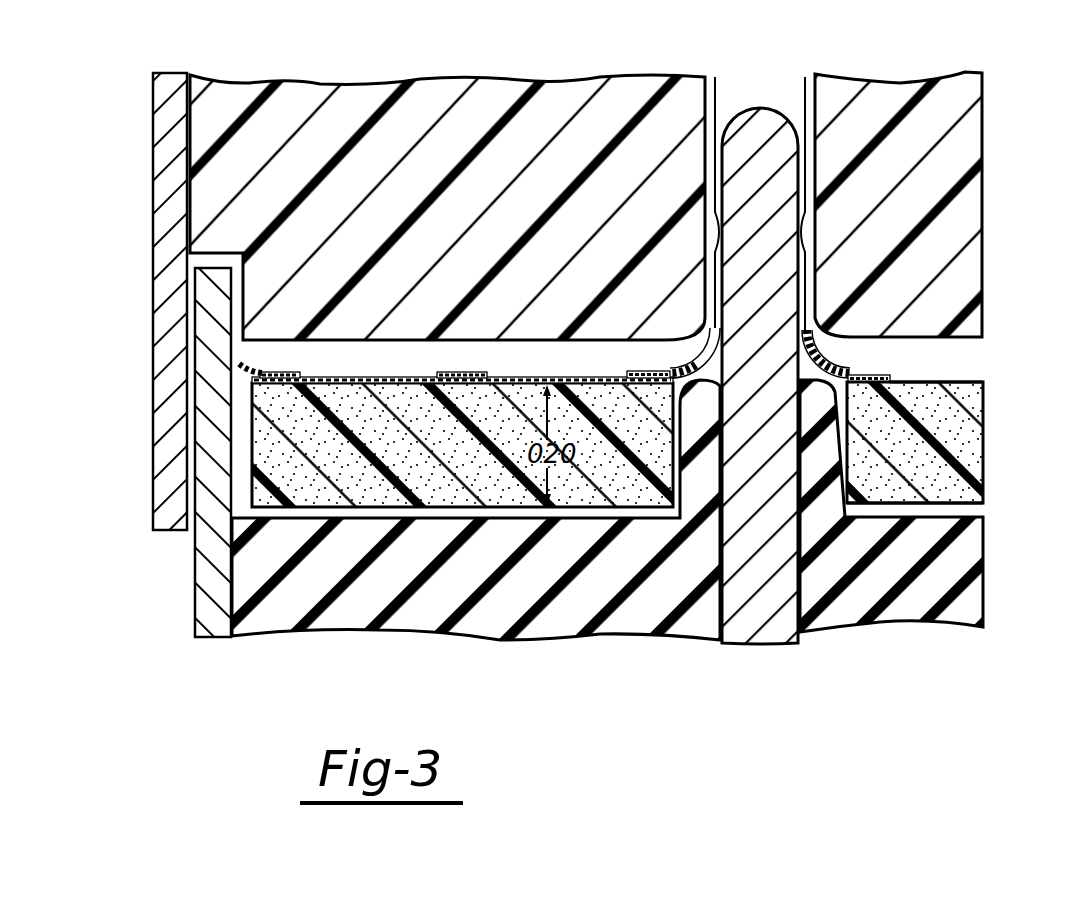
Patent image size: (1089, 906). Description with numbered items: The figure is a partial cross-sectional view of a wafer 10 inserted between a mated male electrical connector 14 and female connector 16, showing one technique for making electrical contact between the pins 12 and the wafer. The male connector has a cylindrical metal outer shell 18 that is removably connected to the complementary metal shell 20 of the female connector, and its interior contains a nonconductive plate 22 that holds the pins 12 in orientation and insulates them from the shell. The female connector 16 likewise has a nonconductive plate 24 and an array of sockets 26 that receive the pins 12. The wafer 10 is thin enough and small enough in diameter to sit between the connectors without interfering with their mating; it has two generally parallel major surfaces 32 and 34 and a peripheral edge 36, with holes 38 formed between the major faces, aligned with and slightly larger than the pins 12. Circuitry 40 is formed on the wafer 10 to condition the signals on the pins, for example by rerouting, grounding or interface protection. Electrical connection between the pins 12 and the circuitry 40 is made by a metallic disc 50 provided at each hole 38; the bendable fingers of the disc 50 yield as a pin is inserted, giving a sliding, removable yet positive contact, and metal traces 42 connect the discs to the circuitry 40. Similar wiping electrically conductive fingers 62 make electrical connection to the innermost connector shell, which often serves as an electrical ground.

The wafer 10 is at (947, 442).
The pins 12 is at (758, 636).
The male electrical connector 14 is at (607, 540).
The female connector 16 is at (932, 62).
The cylindrical metal outer shell 18 is at (197, 593).
The metal shell 20 is at (160, 347).
The nonconductive plate 22 is at (572, 618).
The nonconductive plate 24 is at (447, 98).
The sockets 26 is at (714, 96).
The major surface 32 is at (962, 380).
The major surface 34 is at (957, 505).
The peripheral edge 36 is at (250, 465).
The holes 38 is at (843, 401).
The circuitry 40 is at (487, 375).
The metal traces 42 is at (405, 376).
The metallic disc 50 is at (868, 368).
The wiping electrically conductive fingers 62 is at (270, 372).